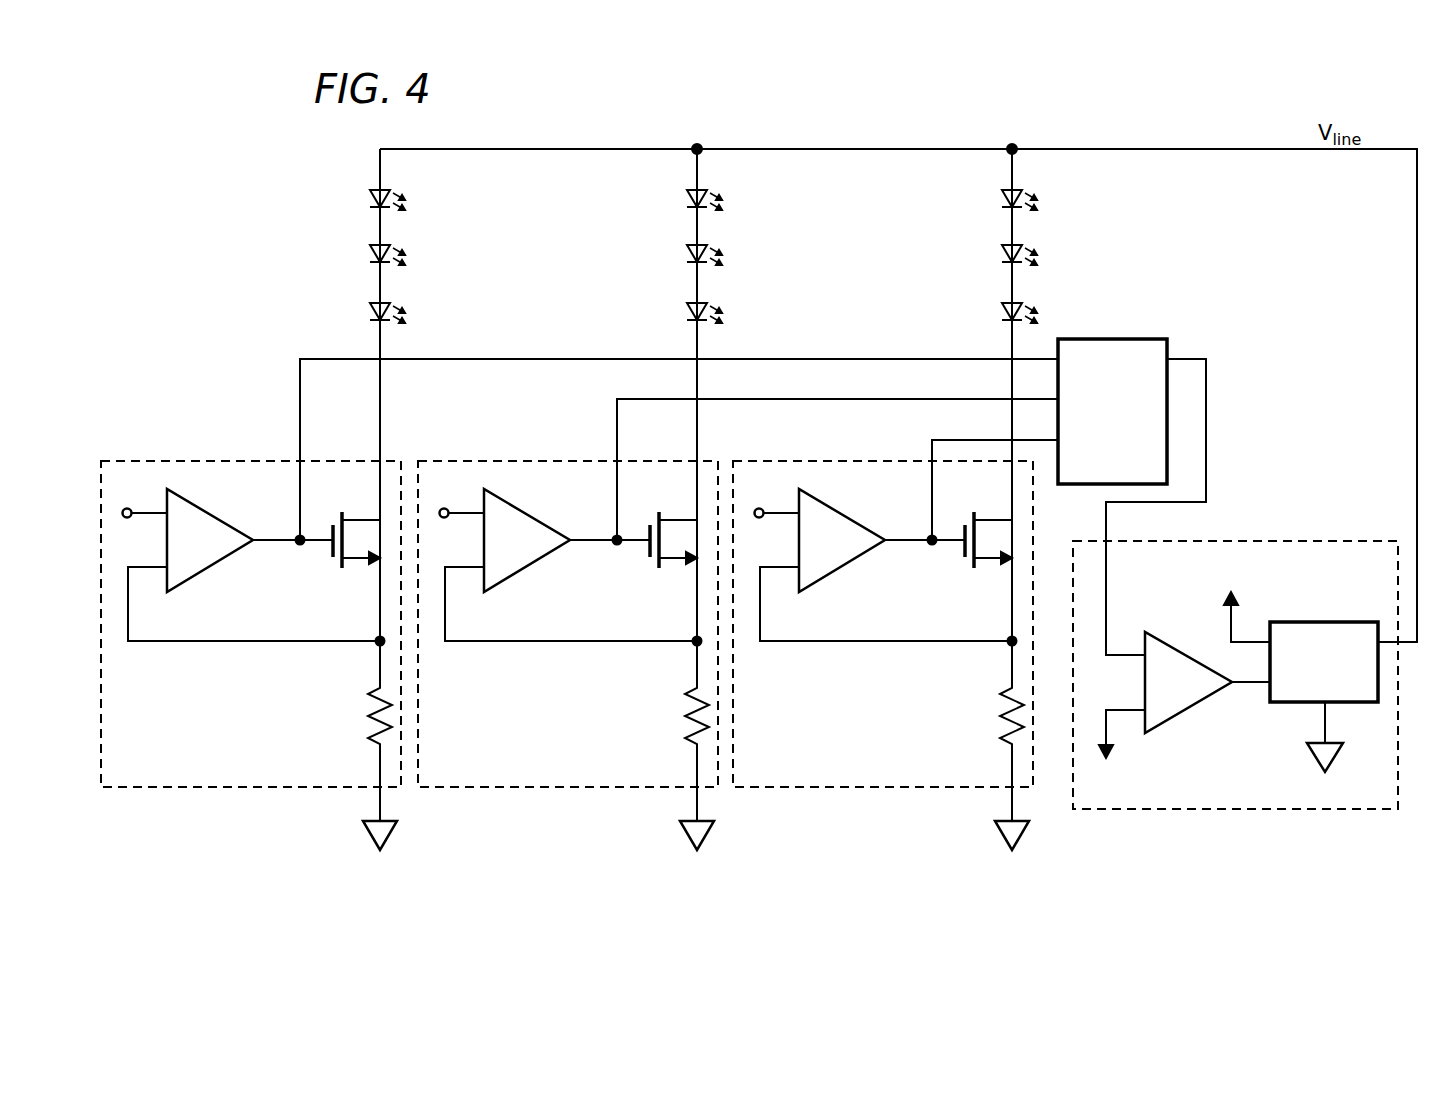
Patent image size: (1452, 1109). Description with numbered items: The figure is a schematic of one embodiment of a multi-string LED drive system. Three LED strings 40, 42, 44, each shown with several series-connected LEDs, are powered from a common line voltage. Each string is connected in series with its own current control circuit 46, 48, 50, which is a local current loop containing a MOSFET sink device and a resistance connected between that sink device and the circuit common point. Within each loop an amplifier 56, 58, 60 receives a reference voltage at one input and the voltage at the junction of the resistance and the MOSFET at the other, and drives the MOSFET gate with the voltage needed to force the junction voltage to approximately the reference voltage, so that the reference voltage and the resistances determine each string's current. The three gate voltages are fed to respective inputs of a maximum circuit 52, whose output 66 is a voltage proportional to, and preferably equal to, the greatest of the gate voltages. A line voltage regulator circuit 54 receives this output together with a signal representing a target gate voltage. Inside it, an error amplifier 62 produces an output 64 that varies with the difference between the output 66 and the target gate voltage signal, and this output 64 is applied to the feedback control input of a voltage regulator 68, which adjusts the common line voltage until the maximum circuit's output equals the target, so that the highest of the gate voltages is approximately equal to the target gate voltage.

The LED string 40 is at (356, 243).
The LED string 42 is at (673, 243).
The LED string 44 is at (988, 243).
The current control circuit 46 is at (251, 595).
The current control circuit 48 is at (568, 595).
The current control circuit 50 is at (883, 595).
The maximum circuit 52 is at (1100, 339).
The line voltage regulator circuit 54 is at (1305, 541).
The amplifier 56 is at (205, 569).
The amplifier 58 is at (522, 569).
The amplifier 60 is at (837, 569).
The error amplifier 62 is at (1200, 662).
The amplifier output 64 is at (1250, 683).
The output of maximum circuit 66 is at (1206, 405).
The voltage regulator 68 is at (1337, 705).